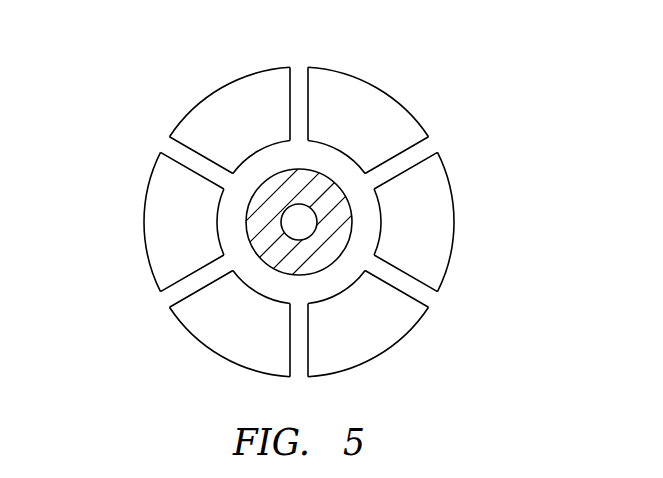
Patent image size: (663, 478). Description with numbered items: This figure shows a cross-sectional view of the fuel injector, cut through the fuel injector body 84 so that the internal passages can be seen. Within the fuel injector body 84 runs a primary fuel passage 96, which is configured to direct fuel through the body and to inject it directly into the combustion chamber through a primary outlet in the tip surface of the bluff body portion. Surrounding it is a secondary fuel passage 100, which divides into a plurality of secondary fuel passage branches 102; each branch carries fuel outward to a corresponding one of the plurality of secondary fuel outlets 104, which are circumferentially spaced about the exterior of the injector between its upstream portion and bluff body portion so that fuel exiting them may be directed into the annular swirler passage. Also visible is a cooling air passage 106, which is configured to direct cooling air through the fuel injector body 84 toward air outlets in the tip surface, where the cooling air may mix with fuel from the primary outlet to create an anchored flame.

The fuel injector body 84 is at (353, 217).
The primary fuel passage 96 is at (301, 225).
The secondary fuel passage 100 is at (328, 155).
The secondary fuel passage branches 102 is at (290, 97).
The secondary fuel outlets 104 is at (430, 137).
The cooling air passage 106 is at (157, 201).